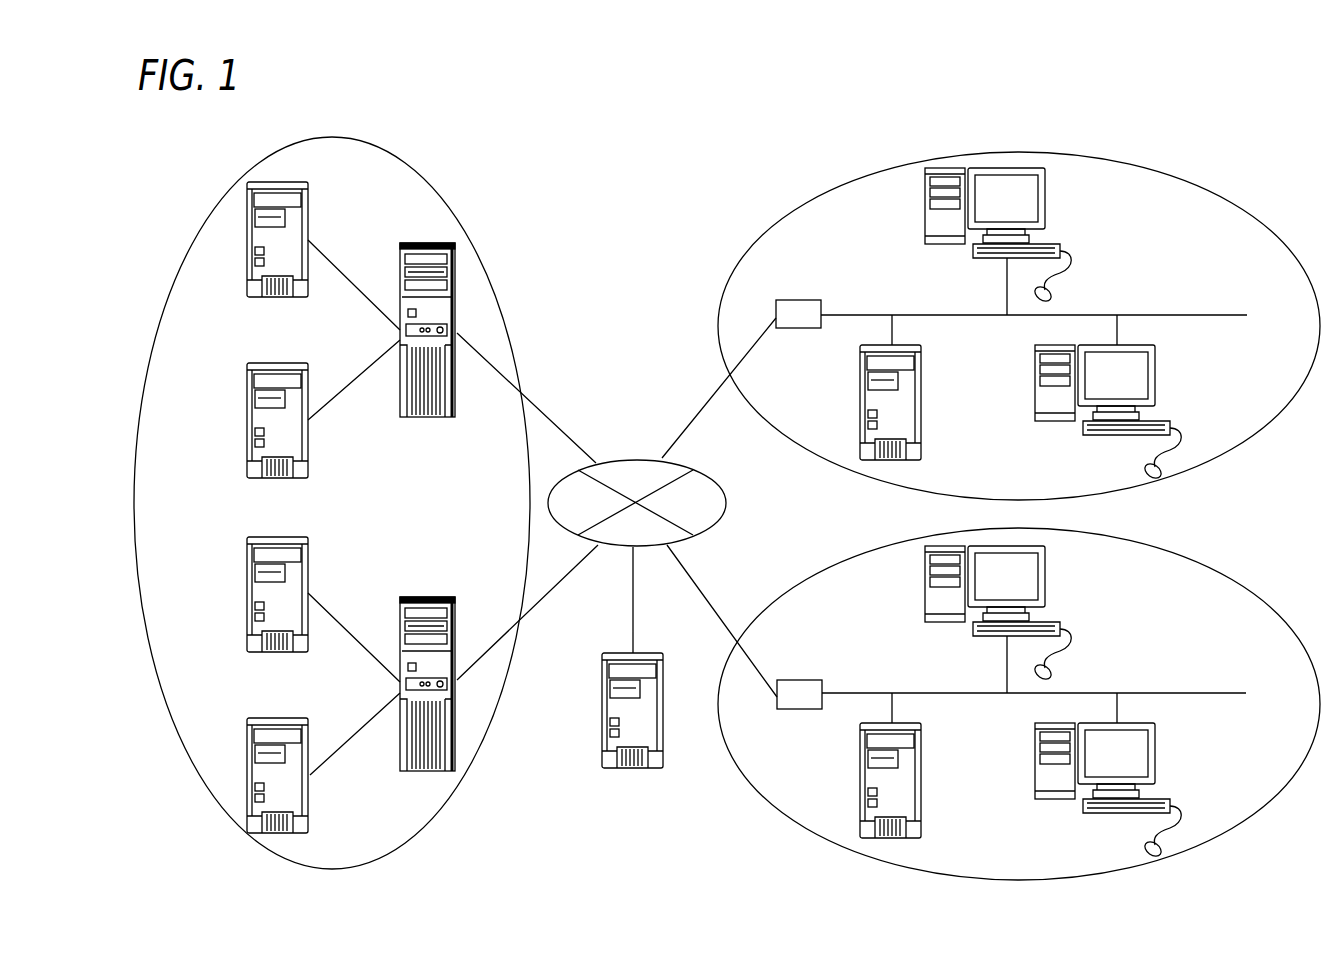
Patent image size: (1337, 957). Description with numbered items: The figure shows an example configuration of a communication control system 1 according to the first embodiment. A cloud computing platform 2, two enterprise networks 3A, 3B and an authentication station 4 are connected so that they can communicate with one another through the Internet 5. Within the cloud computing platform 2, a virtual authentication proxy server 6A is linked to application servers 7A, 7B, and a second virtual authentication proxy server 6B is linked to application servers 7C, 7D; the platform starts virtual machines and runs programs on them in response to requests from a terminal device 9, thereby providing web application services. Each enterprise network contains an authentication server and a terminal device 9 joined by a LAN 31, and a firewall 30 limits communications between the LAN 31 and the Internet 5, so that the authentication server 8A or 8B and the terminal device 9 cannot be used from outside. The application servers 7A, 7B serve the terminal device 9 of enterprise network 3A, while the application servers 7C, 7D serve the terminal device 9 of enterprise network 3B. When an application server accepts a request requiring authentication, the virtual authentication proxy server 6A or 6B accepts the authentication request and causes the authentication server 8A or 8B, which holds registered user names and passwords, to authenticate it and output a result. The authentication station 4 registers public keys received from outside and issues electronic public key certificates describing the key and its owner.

The communication control system 1 is at (840, 110).
The cloud computing platform 2 is at (490, 277).
The enterprise network 3A is at (1192, 178).
The enterprise network 3B is at (1192, 556).
The authentication station 4 is at (632, 767).
The Internet 5 is at (633, 458).
The virtual authentication proxy server 6A is at (428, 243).
The virtual authentication proxy server 6B is at (432, 597).
The application server 7A is at (247, 253).
The application server 7B is at (283, 363).
The application server 7C is at (283, 537).
The application server 7D is at (283, 718).
The authentication server 8A is at (922, 418).
The authentication server 8B is at (922, 793).
The terminal device 9 is at (1046, 203).
The firewall 30 is at (800, 298).
The LAN 31 is at (1157, 313).